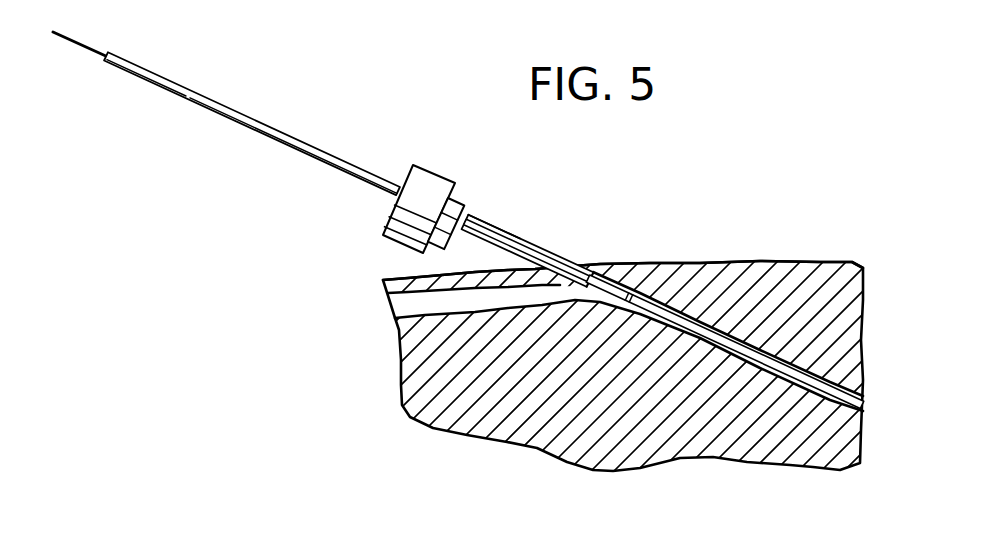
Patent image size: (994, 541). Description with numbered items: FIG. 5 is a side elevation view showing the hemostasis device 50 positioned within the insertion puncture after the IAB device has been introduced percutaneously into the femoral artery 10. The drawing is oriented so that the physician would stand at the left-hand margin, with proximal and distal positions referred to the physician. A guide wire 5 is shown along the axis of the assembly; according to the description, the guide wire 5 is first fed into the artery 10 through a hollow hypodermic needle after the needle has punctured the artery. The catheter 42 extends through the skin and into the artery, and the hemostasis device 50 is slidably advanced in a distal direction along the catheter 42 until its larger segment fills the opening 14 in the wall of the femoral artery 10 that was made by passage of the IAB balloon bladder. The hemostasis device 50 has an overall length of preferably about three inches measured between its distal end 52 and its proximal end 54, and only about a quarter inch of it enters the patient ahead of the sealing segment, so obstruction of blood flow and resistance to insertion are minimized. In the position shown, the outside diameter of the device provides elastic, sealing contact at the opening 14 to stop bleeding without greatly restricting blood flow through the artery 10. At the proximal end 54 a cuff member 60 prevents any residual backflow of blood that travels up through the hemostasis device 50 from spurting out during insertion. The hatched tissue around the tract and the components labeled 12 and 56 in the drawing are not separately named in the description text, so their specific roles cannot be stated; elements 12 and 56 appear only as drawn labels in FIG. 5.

The guide wire 5 is at (70, 40).
The femoral artery 10 is at (397, 304).
The skin surface 12 is at (717, 317).
The opening 14 is at (615, 273).
The catheter 42 is at (297, 143).
The hemostasis device 50 is at (535, 249).
The distal end 52 is at (644, 318).
The proximal end 54 is at (483, 222).
The catheter tip 56 is at (611, 280).
The cuff member 60 is at (444, 171).